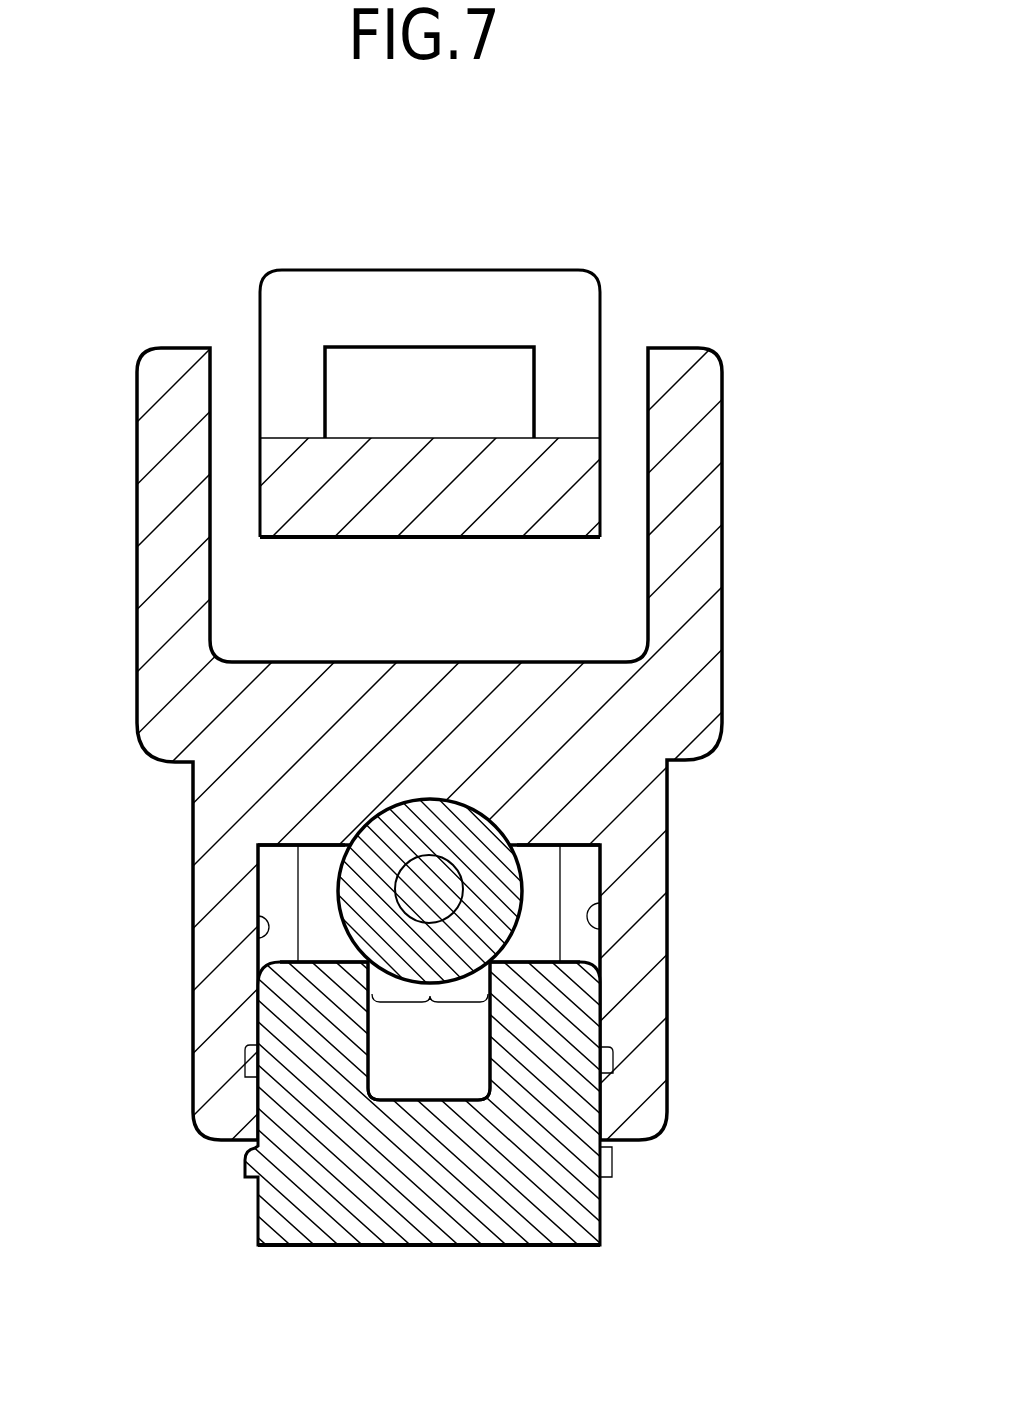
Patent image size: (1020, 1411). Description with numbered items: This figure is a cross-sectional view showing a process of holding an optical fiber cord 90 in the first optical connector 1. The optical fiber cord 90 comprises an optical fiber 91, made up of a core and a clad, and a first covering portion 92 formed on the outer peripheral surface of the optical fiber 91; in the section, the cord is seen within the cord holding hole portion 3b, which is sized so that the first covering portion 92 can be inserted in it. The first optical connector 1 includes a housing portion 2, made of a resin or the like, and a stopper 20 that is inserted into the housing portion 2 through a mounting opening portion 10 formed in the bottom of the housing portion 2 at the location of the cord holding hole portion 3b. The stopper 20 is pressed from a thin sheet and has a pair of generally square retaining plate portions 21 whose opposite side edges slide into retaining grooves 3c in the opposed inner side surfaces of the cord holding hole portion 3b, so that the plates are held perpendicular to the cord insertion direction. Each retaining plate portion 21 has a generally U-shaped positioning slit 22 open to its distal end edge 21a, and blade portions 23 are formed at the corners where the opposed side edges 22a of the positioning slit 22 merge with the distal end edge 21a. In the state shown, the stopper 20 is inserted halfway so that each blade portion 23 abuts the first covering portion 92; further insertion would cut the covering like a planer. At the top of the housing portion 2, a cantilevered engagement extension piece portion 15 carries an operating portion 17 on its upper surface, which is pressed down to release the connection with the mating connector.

The first optical connector 1 is at (519, 233).
The housing portion 2 is at (705, 695).
The cord holding hole portion 3b is at (540, 845).
The retaining grooves 3c is at (595, 927).
The mounting opening portion 10 is at (597, 1115).
The engagement extension piece portion 15 is at (375, 540).
The operating portion 17 is at (375, 270).
The stopper 20 is at (437, 1248).
The retaining plate portion 21 is at (600, 1218).
The distal end edge 21a is at (535, 958).
The positioning slit 22 is at (368, 1068).
The side edges 22a is at (430, 1022).
The blade portion 23 is at (458, 898).
The optical fiber cord 90 is at (383, 803).
The optical fiber 91 is at (430, 868).
The first covering portion 92 is at (470, 820).